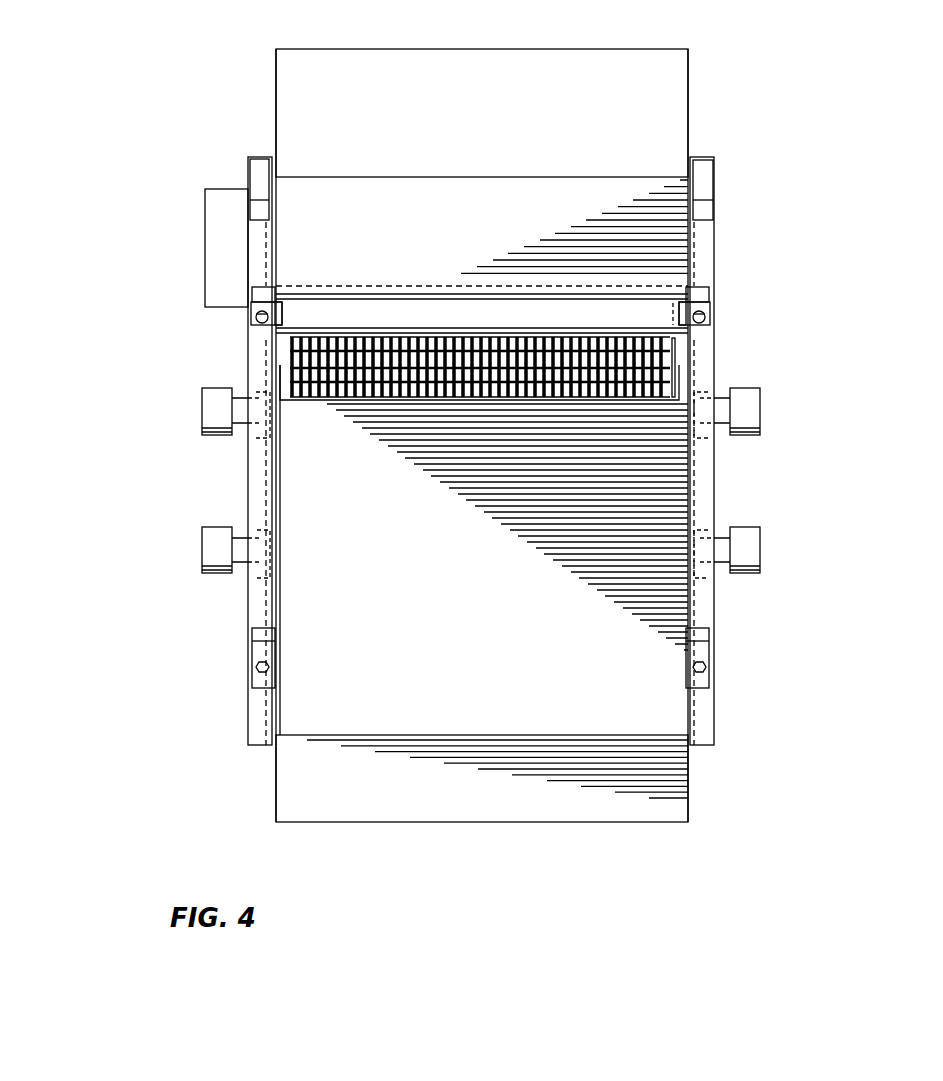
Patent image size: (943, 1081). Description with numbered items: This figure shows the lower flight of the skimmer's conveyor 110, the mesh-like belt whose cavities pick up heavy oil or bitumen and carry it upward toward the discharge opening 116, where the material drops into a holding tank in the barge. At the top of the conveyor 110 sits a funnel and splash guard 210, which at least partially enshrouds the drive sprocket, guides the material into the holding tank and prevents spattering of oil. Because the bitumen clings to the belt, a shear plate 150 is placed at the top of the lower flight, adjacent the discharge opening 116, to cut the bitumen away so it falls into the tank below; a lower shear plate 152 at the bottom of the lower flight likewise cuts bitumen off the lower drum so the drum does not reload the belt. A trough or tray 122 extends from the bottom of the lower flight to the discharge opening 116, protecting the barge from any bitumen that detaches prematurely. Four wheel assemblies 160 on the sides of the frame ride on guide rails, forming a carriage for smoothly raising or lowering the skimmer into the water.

The conveyor 110 is at (672, 358).
The discharge opening 116 is at (215, 368).
The trough or tray 122 is at (295, 787).
The shear plate 150 is at (297, 322).
The lower shear plate 152 is at (258, 681).
The wheel assemblies 160 is at (214, 531).
The funnel and splash guard 210 is at (557, 63).